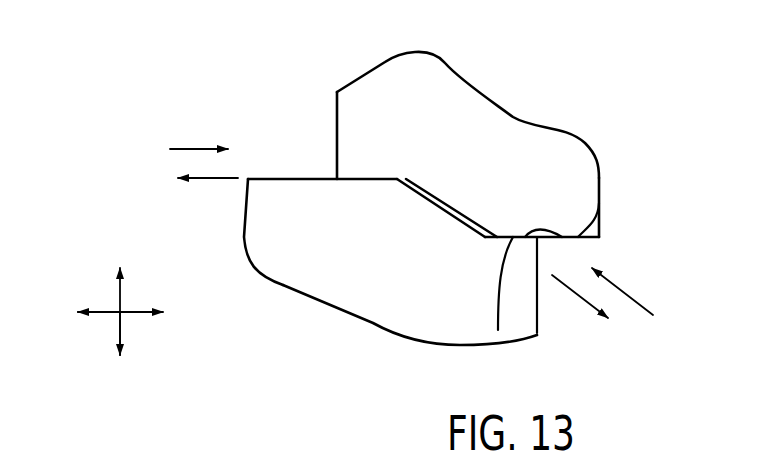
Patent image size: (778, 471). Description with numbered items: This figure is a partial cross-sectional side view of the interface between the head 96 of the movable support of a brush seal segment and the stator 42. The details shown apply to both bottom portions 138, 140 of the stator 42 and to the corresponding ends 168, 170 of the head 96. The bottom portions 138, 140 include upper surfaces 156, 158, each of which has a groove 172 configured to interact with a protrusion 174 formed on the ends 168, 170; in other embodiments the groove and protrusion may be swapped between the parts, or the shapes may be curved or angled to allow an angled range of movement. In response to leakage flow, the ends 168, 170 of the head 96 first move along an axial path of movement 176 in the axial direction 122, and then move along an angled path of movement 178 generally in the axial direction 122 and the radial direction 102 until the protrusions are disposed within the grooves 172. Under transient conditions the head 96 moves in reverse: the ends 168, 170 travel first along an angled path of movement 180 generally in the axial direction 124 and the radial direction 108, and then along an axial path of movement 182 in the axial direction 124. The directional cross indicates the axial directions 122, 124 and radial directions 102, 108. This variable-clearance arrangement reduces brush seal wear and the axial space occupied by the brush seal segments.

The head 96 is at (537, 145).
The end 168 is at (511, 115).
The end 170 is at (528, 95).
The protrusion 174 is at (600, 203).
The upper surface 156 is at (611, 253).
The upper surface 158 is at (560, 238).
The groove 172 is at (498, 332).
The stator 42 is at (390, 300).
The bottom portion 138 is at (410, 353).
The bottom portion 140 is at (350, 335).
The axial path of movement 176 is at (190, 148).
The axial path of movement 182 is at (208, 178).
The angled path of movement 178 is at (578, 297).
The angled path of movement 180 is at (624, 297).
The radial direction 108 is at (118, 296).
The axial direction 122 is at (135, 308).
The axial direction 124 is at (104, 318).
The radial direction 102 is at (124, 328).